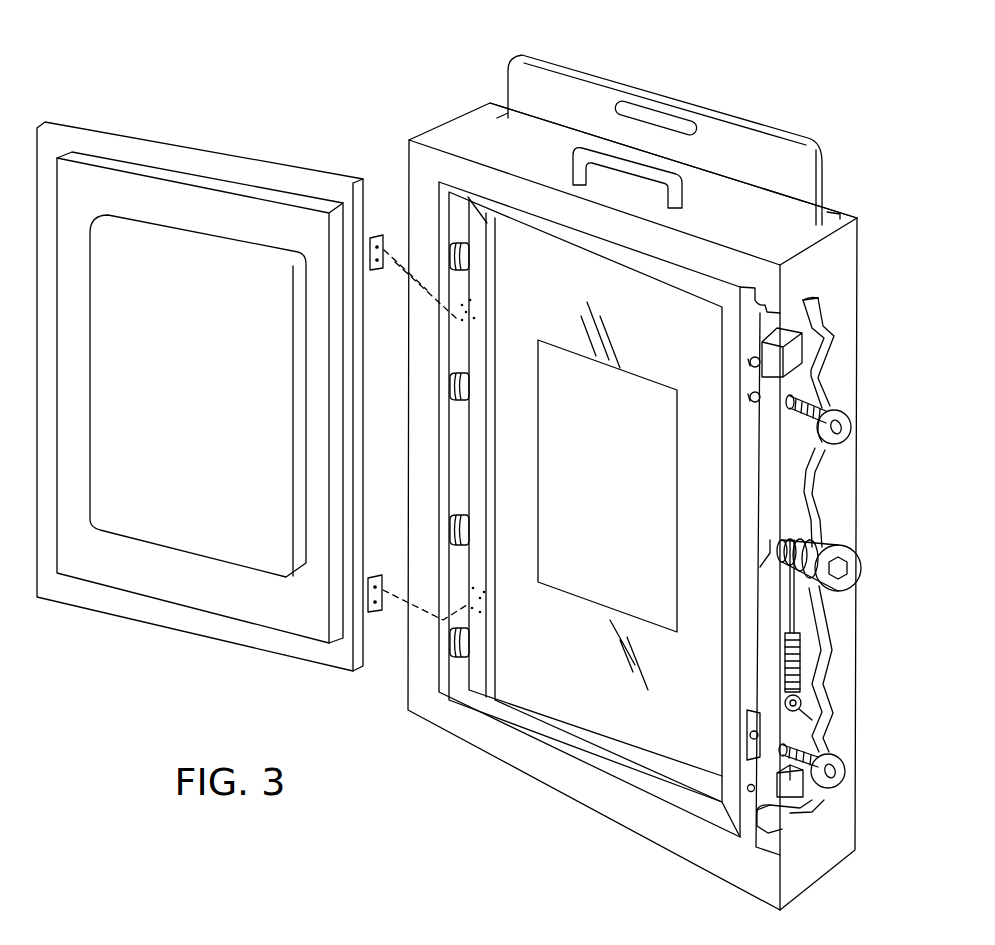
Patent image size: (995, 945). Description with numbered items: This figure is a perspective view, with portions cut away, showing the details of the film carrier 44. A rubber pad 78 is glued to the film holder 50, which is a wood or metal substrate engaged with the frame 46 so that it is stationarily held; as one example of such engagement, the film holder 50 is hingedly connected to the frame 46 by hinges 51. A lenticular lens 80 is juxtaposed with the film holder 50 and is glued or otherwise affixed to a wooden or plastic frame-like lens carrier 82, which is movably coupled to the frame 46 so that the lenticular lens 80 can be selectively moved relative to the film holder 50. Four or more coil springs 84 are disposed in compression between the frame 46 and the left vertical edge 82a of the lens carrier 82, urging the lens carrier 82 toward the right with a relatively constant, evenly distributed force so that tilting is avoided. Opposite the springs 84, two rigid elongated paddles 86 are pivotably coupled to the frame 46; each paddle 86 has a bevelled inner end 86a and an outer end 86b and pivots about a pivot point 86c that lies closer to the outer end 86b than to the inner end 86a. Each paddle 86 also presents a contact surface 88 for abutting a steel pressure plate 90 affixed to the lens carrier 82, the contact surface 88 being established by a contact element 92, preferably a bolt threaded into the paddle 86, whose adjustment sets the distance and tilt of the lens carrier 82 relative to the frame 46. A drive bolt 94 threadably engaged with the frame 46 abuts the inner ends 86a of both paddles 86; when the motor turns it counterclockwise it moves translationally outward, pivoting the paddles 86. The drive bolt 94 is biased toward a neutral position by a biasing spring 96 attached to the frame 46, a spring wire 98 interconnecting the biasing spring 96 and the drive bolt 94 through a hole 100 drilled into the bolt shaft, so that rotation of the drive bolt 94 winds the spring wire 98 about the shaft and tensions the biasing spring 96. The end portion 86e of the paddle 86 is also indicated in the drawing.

The film carrier 44 is at (363, 62).
The frame 46 is at (446, 133).
The film holder 50 is at (112, 150).
The hinges 51 is at (378, 270).
The rubber pad 78 is at (228, 268).
The lenticular lens 80 is at (605, 482).
The lens carrier 82 is at (487, 219).
The left vertical edge 82a is at (462, 372).
The coil springs 84 is at (463, 656).
The paddles 86 is at (788, 492).
The bevelled inner end 86a is at (758, 528).
The outer end 86b is at (790, 333).
The pivot point 86c is at (800, 440).
The latch bar end 86e is at (783, 380).
The contact surface 88 is at (744, 378).
The pressure plate 90 is at (751, 437).
The contact element 92 is at (830, 460).
The drive bolt 94 is at (795, 618).
The biasing spring 96 is at (808, 708).
The spring wire 98 is at (798, 680).
The hole 100 is at (858, 553).